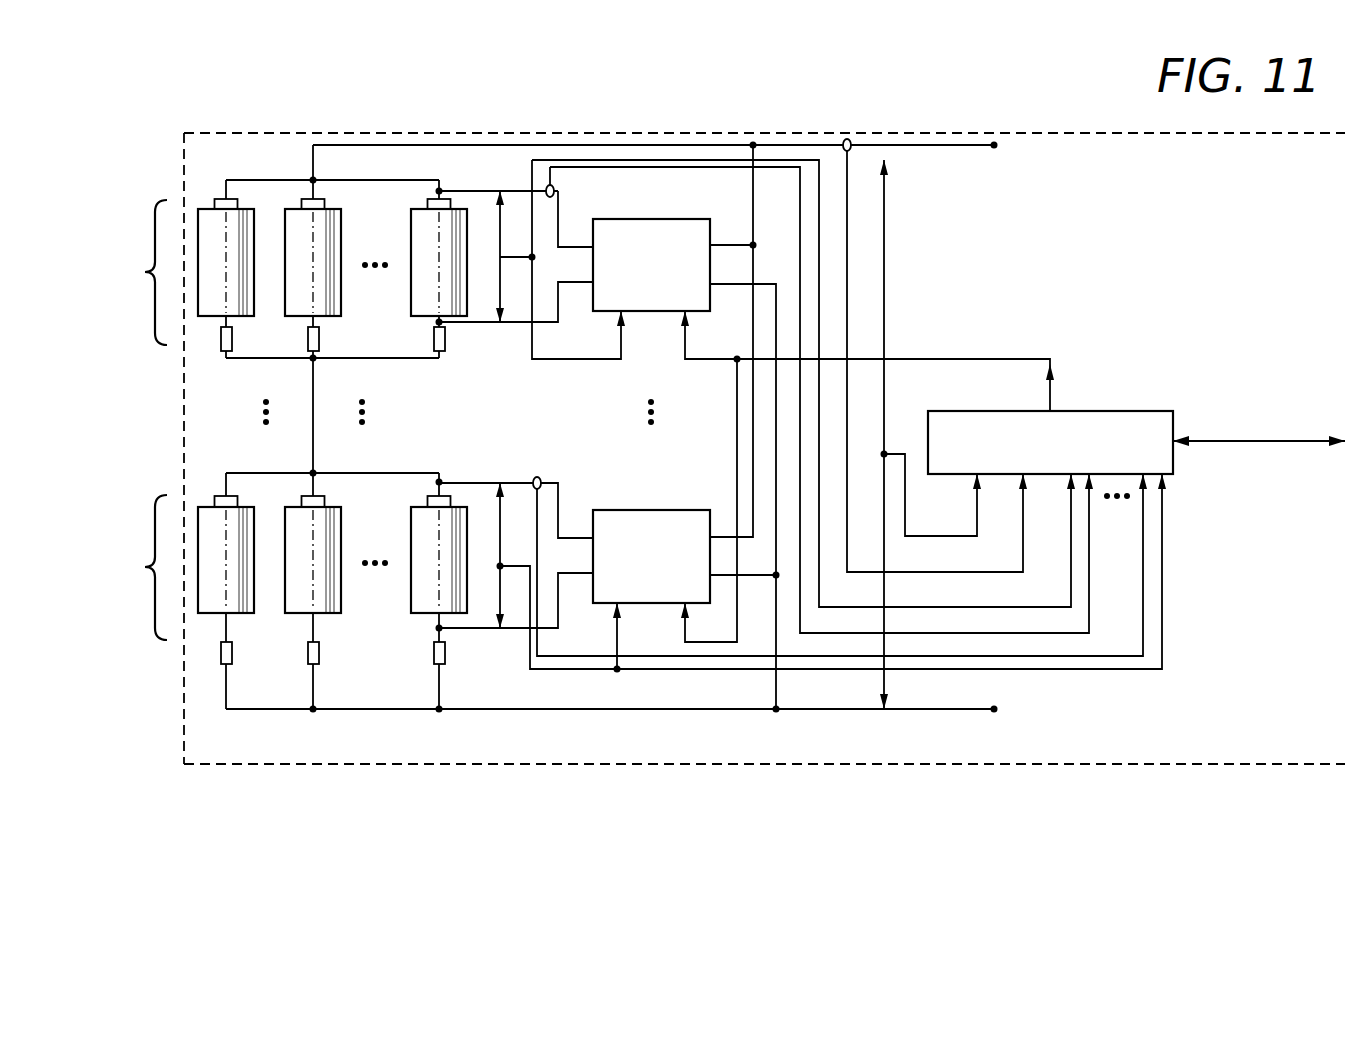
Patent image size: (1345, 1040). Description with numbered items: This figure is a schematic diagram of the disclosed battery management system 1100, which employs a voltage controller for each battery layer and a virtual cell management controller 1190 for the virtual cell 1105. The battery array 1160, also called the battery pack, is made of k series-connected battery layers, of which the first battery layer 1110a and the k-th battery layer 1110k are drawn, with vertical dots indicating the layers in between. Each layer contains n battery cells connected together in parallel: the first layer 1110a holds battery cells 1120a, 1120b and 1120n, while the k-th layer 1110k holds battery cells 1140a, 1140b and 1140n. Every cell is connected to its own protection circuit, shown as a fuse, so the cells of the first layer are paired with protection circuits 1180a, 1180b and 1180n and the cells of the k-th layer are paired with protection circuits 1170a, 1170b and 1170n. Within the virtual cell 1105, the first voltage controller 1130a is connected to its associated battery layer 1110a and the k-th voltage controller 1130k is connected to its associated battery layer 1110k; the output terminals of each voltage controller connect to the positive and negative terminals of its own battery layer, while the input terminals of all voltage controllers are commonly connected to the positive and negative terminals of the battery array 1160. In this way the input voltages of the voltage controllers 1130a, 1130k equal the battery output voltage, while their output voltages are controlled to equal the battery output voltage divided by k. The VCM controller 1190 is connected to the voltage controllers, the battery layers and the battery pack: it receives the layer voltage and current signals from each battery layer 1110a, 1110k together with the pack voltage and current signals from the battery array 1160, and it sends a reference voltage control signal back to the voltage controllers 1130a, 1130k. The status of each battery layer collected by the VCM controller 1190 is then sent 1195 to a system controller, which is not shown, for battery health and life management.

The battery management system 1100 is at (1160, 778).
The virtual cell 1105 is at (719, 796).
The battery layer 1110a is at (145, 272).
The battery layer 1110k is at (145, 567).
The battery cell 1120a is at (199, 209).
The battery cell 1120b is at (364, 206).
The battery cell 1120n is at (411, 290).
The voltage controller 1130a is at (652, 219).
The voltage controller 1130k is at (628, 510).
The battery cell 1140a is at (199, 507).
The battery cell 1140b is at (342, 523).
The battery cell 1140n is at (411, 585).
The battery array 1160 is at (358, 750).
The protection circuit 1170a is at (232, 652).
The protection circuit 1170b is at (319, 652).
The protection circuit 1170n is at (445, 652).
The protection circuit 1180a is at (221, 338).
The protection circuit 1180b is at (319, 338).
The protection circuit 1180n is at (445, 338).
The virtual cell management controller 1190 is at (1143, 411).
The status signal sent to system controller 1195 is at (1264, 441).